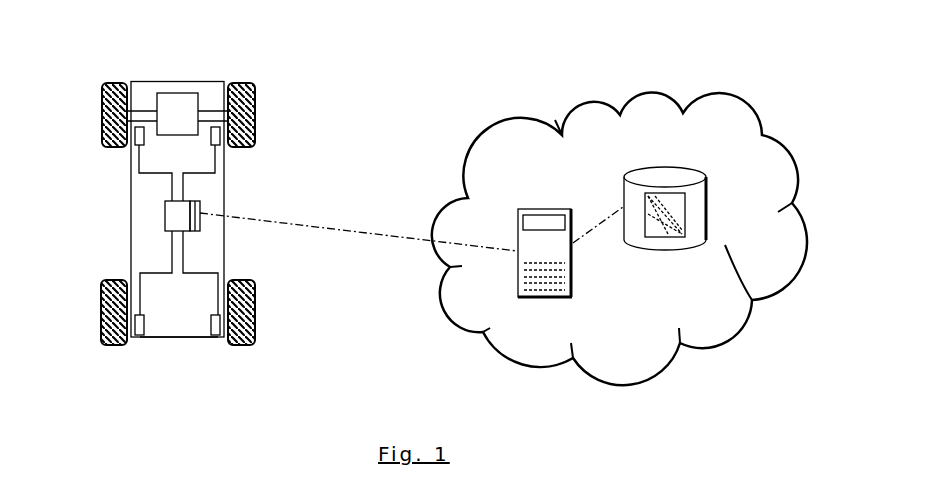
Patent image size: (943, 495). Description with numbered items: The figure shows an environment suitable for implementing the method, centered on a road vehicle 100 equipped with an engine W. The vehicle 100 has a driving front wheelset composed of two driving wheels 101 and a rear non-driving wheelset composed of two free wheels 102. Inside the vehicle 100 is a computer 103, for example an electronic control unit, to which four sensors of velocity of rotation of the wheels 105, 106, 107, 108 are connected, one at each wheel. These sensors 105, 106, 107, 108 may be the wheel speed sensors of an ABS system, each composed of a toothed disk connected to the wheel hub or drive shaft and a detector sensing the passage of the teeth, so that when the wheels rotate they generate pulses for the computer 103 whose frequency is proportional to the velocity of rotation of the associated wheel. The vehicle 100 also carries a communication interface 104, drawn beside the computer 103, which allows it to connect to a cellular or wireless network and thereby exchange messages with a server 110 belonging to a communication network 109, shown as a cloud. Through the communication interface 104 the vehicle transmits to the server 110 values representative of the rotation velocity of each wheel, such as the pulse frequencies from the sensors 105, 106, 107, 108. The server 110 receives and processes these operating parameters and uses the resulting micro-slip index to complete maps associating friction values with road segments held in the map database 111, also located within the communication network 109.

The road vehicle 100 is at (190, 82).
The driving wheel 101 is at (255, 104).
The free wheel 102 is at (255, 332).
The computer 103 is at (165, 213).
The communication interface 104 is at (200, 230).
The sensor of velocity of rotation of the wheels 105 is at (220, 147).
The sensor of velocity of rotation of the wheels 106 is at (131, 147).
The sensor of velocity of rotation of the wheels 107 is at (138, 337).
The sensor of velocity of rotation of the wheels 108 is at (216, 337).
The communication network 109 is at (596, 106).
The server 110 is at (553, 208).
The map database 111 is at (664, 166).